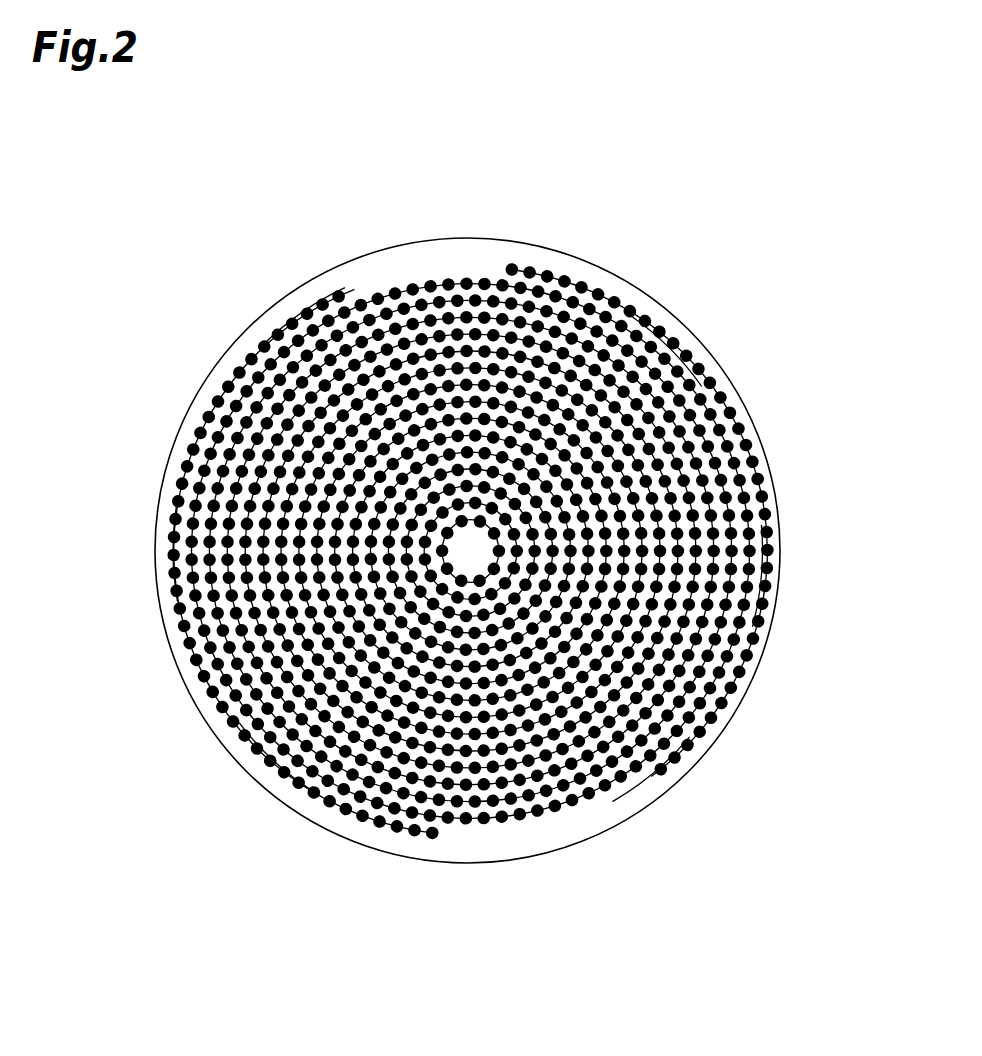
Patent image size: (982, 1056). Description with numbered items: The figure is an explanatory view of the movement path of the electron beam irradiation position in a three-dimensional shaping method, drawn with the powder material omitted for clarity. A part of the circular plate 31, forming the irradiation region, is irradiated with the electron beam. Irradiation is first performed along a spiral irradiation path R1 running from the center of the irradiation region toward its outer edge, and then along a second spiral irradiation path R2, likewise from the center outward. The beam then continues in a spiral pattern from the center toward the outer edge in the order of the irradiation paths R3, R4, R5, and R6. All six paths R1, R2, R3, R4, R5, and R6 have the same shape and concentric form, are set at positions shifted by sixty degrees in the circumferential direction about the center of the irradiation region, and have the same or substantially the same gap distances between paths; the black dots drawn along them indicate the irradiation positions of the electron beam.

The circular plate 31 is at (768, 667).
The irradiation path R1 is at (170, 571).
The irradiation path R2 is at (302, 318).
The irradiation path R3 is at (668, 350).
The irradiation path R4 is at (766, 568).
The irradiation path R5 is at (651, 777).
The irradiation path R6 is at (273, 760).